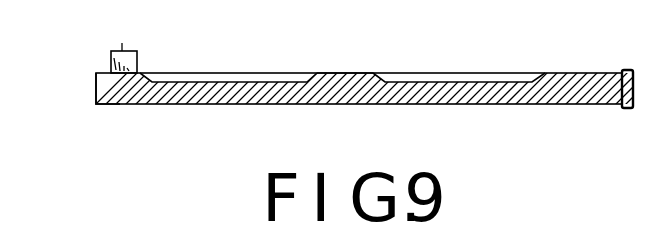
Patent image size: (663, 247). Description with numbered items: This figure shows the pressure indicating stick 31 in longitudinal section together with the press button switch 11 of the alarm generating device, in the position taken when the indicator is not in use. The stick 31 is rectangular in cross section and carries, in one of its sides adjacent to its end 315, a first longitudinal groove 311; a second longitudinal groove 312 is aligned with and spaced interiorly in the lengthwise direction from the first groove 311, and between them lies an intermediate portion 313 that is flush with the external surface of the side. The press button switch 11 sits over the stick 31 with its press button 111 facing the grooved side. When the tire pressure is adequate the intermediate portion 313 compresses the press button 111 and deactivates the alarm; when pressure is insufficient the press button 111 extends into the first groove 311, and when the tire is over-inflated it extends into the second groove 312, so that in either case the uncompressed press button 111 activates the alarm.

The press button switch 11 is at (131, 53).
The press button 111 is at (113, 61).
The pressure indicating stick 31 is at (143, 104).
The first longitudinal groove 311 is at (248, 78).
The second longitudinal groove 312 is at (445, 78).
The intermediate portion 313 is at (358, 73).
The end of the stick 315 is at (106, 104).